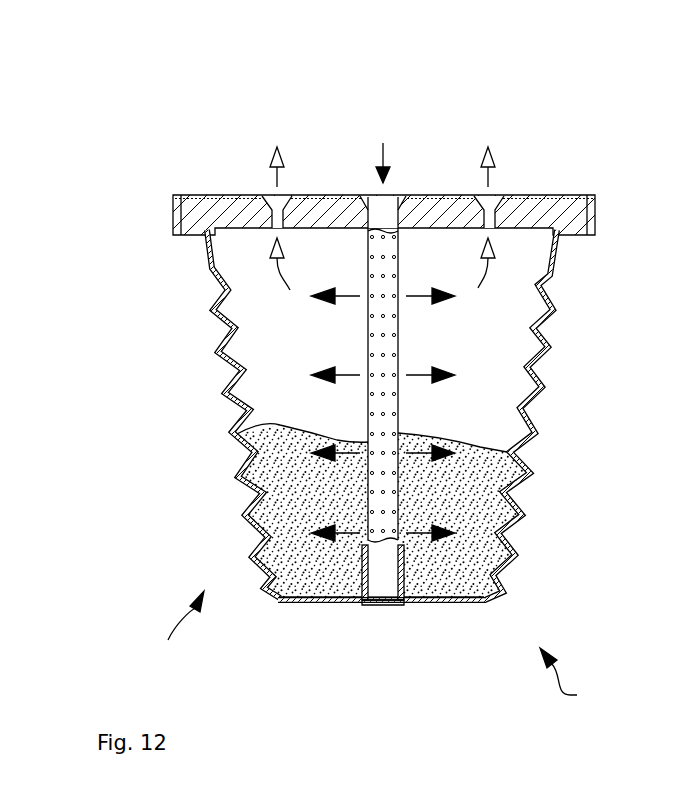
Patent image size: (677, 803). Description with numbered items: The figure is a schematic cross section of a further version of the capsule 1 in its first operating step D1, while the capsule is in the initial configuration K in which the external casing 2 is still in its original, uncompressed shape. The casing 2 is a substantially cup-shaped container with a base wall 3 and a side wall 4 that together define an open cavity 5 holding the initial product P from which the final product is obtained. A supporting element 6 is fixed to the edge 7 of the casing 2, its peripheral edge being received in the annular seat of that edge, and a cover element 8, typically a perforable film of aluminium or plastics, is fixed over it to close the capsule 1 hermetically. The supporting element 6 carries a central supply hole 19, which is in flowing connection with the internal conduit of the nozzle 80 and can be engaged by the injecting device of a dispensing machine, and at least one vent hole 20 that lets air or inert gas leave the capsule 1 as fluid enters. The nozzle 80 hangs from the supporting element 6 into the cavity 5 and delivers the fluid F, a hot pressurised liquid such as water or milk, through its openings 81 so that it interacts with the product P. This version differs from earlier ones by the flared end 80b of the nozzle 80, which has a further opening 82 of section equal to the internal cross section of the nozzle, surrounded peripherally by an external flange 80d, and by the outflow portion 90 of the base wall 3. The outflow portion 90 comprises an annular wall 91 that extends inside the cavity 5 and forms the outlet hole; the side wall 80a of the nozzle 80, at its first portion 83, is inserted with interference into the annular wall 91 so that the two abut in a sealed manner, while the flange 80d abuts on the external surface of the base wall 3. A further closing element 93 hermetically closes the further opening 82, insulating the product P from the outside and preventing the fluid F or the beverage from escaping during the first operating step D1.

The capsule 1 is at (185, 102).
The external casing 2 is at (575, 401).
The base wall 3 is at (300, 603).
The side wall 4 is at (547, 348).
The cavity 5 is at (492, 347).
The supporting element 6 is at (541, 213).
The edge 7 is at (175, 216).
The cover element 8 is at (203, 195).
The supply hole 19 is at (393, 197).
The vent hole 20 is at (283, 197).
The nozzle 80 is at (377, 343).
The side wall of the nozzle 80a is at (236, 436).
The end of the nozzle 80b is at (380, 577).
The external flange 80d is at (363, 603).
The openings of the nozzle 81 is at (383, 395).
The further opening 82 is at (383, 603).
The first portion 83 is at (340, 499).
The outflow portion 90 is at (428, 582).
The annular wall 91 is at (310, 600).
The further closing element 93 is at (410, 603).
The fluid F is at (345, 378).
The initial product P is at (507, 540).
The first operating step D1 is at (166, 629).
The initial configuration K is at (577, 678).